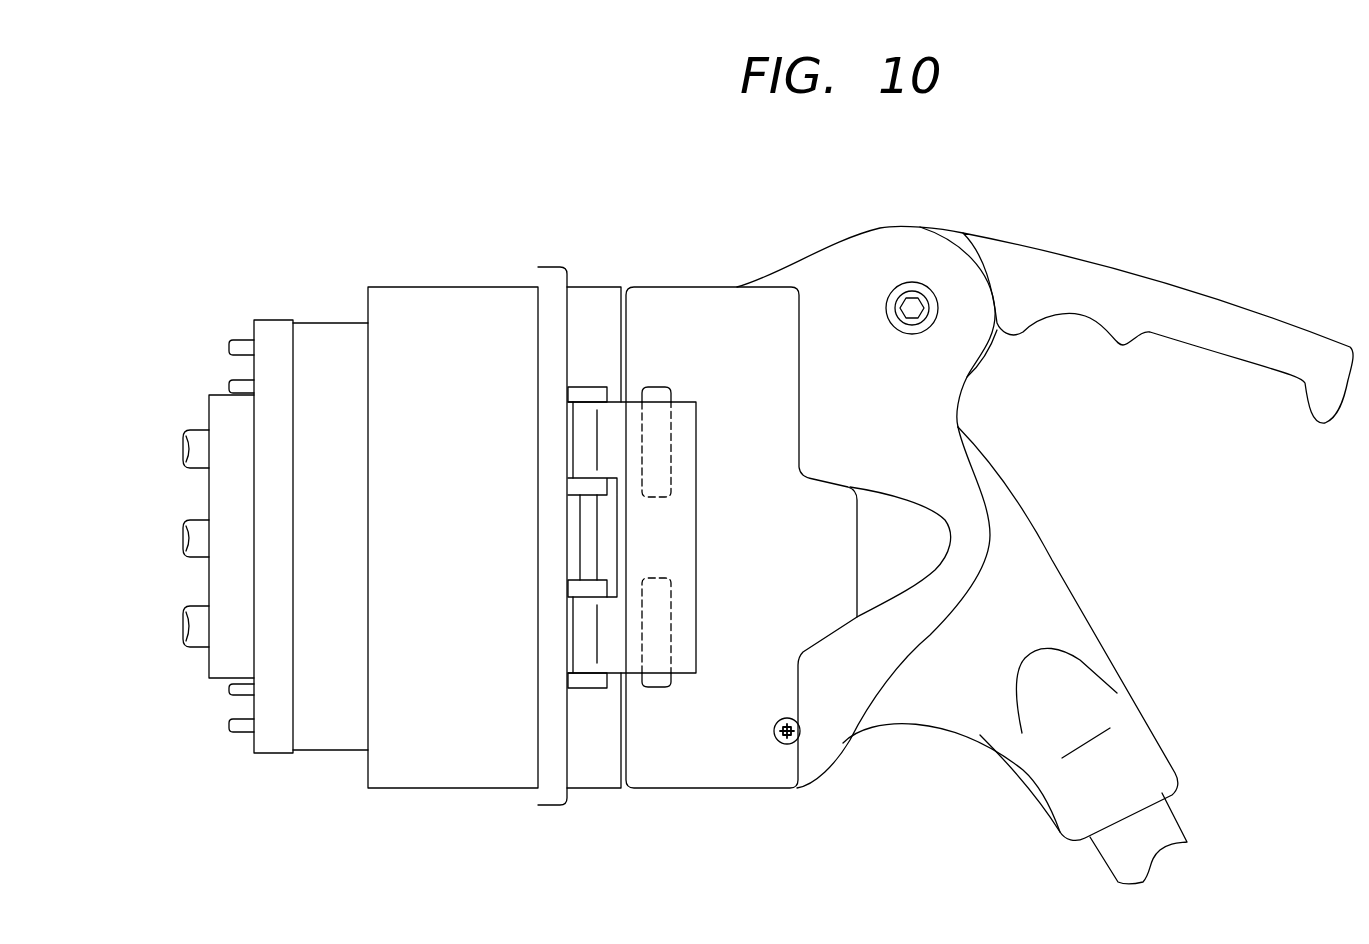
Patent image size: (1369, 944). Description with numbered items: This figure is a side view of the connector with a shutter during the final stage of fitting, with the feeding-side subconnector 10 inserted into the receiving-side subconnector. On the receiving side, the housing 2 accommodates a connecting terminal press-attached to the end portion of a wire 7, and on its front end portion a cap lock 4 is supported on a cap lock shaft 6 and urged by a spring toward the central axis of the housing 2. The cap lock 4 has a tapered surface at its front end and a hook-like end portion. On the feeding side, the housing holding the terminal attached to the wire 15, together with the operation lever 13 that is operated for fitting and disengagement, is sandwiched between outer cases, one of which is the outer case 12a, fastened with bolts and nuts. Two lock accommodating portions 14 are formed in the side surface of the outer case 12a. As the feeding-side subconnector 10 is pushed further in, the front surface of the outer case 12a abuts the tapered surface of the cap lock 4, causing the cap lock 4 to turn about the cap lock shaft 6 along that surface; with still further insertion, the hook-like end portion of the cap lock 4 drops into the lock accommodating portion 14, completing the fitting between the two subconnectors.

The housing 2 is at (483, 297).
The cap lock 4 is at (682, 530).
The cap lock shaft 6 is at (587, 535).
The wire 7 is at (197, 432).
The feeding-side subconnector 10 is at (840, 213).
The outer case 12a is at (703, 300).
The operation lever 13 is at (1088, 268).
The lock accommodating portion 14 is at (672, 390).
The wire 15 is at (1170, 822).